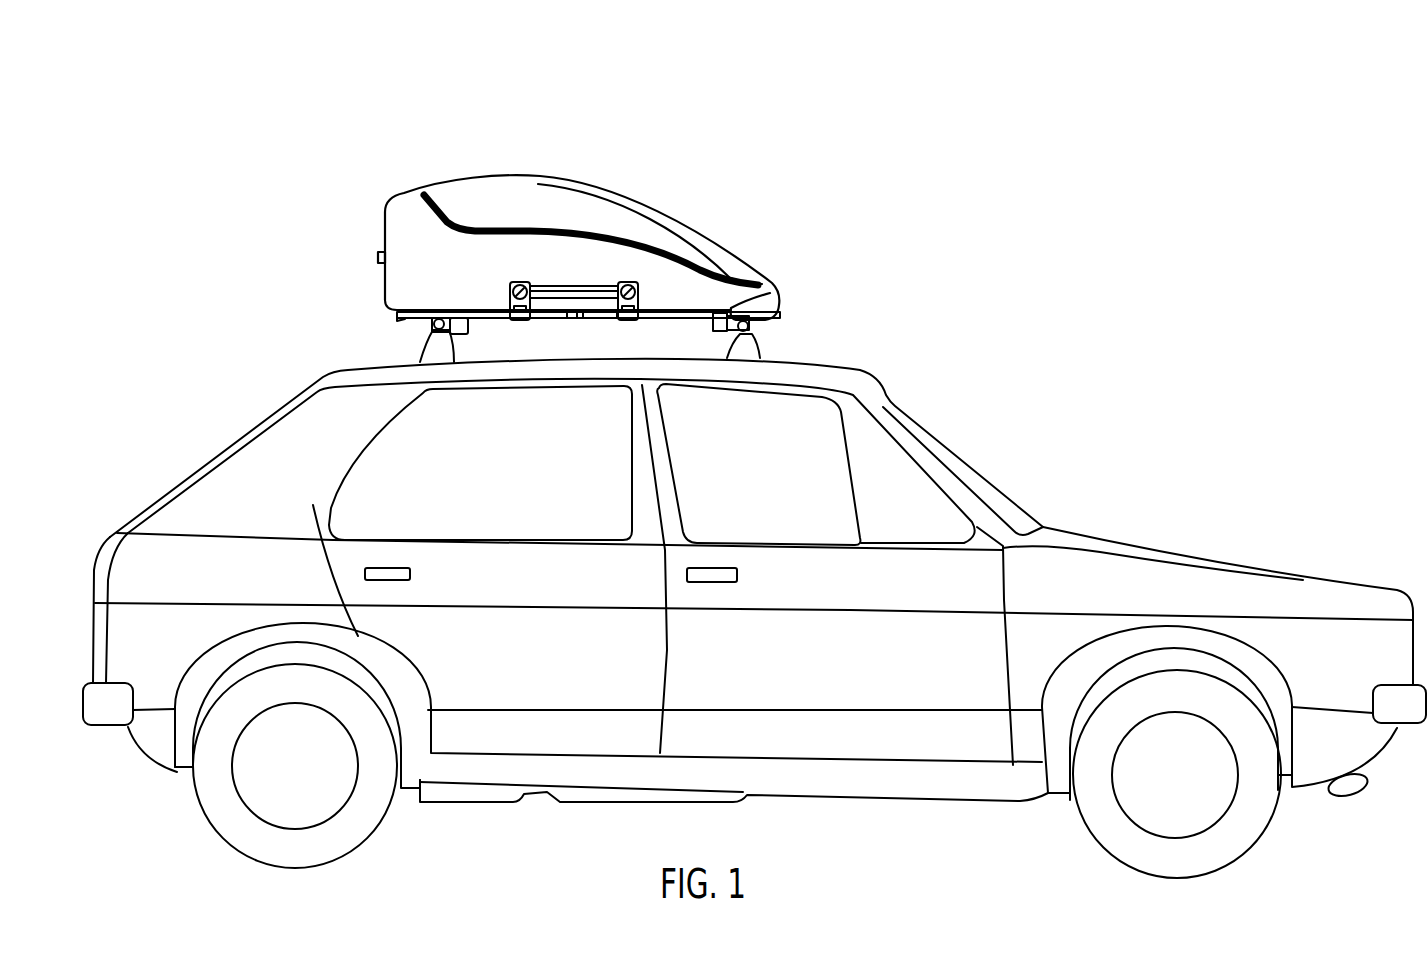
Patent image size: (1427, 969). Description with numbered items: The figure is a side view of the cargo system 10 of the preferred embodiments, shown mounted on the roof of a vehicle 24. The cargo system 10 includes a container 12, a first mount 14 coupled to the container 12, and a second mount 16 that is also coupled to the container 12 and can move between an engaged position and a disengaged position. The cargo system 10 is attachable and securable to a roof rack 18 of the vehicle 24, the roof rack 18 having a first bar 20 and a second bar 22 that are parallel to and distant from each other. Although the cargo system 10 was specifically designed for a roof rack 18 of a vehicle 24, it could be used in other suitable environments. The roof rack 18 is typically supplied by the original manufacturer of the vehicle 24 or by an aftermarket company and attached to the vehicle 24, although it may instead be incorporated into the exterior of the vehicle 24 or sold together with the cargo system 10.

The cargo system 10 is at (642, 203).
The container 12 is at (630, 213).
The first mount 14 is at (730, 308).
The second mount 16 is at (463, 313).
The roof rack 18 is at (648, 336).
The first bar 20 is at (750, 328).
The second bar 22 is at (433, 322).
The vehicle 24 is at (980, 527).